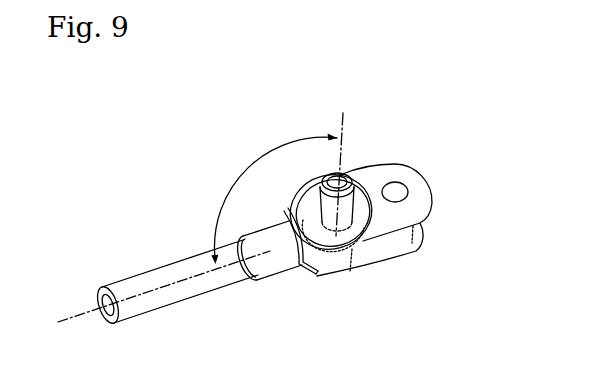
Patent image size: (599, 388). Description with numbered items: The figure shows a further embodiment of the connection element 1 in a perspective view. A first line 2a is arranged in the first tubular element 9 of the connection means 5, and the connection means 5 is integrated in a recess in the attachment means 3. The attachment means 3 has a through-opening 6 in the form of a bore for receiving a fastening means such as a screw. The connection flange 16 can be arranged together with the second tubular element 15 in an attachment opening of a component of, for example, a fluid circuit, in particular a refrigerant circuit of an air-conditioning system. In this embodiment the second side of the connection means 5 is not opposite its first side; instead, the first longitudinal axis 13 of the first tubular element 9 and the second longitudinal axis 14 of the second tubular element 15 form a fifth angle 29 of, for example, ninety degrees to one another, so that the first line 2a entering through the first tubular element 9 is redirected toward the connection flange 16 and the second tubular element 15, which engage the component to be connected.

The connection element 1 is at (374, 93).
The first line 2a is at (185, 264).
The attachment means 3 is at (375, 180).
The connection means 5 is at (302, 243).
The through-opening 6 is at (395, 192).
The first tubular element 9 is at (273, 268).
The first longitudinal axis 13 is at (92, 310).
The second longitudinal axis 14 is at (340, 120).
The second tubular element 15 is at (348, 173).
The connection flange 16 is at (357, 222).
The fifth angle 29 is at (253, 166).